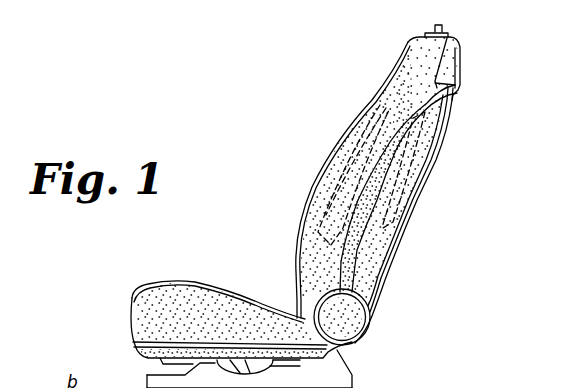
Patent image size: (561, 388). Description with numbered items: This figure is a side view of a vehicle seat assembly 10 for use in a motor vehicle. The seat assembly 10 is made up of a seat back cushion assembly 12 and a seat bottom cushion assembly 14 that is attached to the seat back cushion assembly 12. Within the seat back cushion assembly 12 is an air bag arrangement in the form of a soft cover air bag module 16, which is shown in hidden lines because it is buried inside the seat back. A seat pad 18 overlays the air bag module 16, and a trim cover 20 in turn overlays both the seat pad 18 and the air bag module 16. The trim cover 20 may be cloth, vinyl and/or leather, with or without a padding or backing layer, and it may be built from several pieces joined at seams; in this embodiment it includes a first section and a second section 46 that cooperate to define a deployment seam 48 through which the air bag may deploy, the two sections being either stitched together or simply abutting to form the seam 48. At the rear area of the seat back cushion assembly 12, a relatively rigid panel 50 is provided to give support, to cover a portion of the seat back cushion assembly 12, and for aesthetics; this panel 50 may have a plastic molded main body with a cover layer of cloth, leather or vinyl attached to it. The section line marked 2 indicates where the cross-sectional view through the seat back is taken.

The vehicle seat assembly 10 is at (248, 130).
The seat back cushion assembly 12 is at (300, 203).
The seat bottom cushion assembly 14 is at (180, 282).
The soft cover air bag module 16 is at (440, 170).
The seat pad 18 is at (423, 63).
The trim cover 20 is at (293, 253).
The second section 46 is at (320, 263).
The deployment seam 48 is at (292, 233).
The rigid panel 50 is at (398, 253).
The section line 2- 2 is at (289, 166).